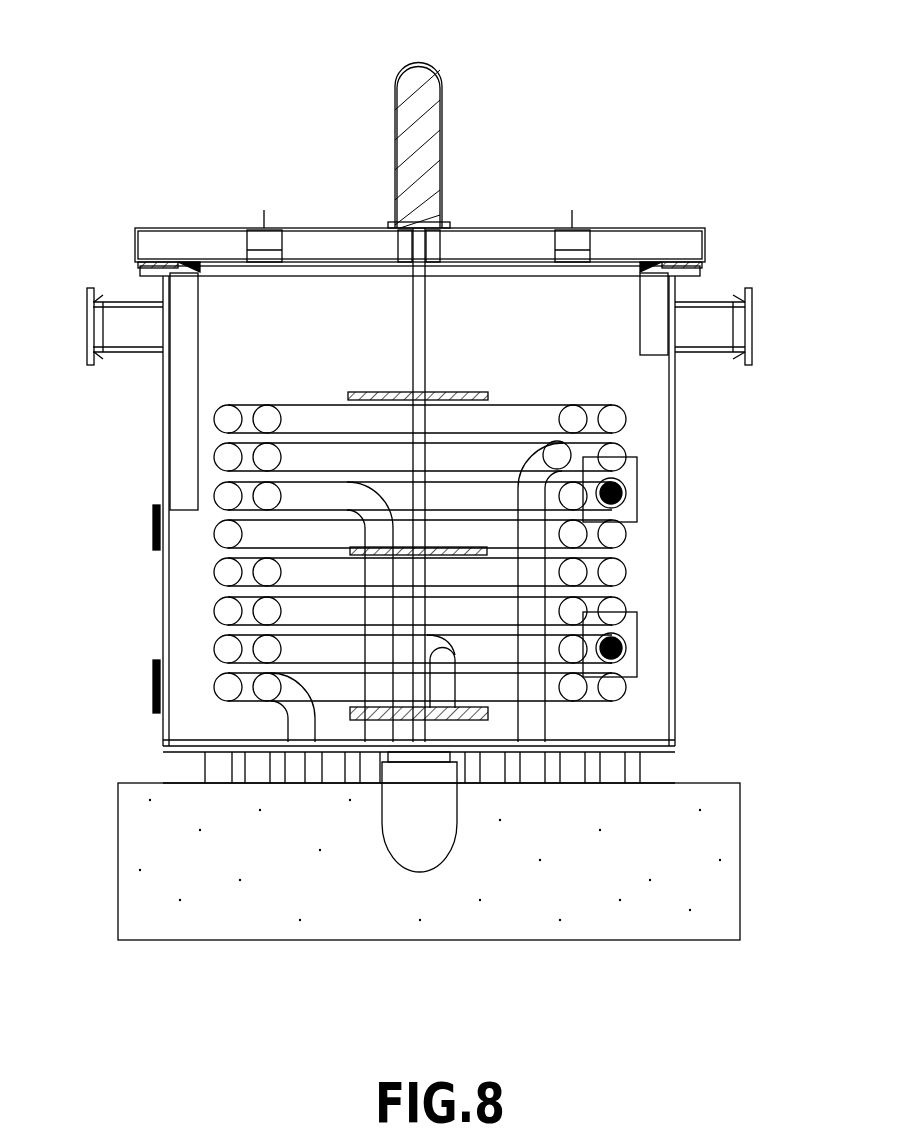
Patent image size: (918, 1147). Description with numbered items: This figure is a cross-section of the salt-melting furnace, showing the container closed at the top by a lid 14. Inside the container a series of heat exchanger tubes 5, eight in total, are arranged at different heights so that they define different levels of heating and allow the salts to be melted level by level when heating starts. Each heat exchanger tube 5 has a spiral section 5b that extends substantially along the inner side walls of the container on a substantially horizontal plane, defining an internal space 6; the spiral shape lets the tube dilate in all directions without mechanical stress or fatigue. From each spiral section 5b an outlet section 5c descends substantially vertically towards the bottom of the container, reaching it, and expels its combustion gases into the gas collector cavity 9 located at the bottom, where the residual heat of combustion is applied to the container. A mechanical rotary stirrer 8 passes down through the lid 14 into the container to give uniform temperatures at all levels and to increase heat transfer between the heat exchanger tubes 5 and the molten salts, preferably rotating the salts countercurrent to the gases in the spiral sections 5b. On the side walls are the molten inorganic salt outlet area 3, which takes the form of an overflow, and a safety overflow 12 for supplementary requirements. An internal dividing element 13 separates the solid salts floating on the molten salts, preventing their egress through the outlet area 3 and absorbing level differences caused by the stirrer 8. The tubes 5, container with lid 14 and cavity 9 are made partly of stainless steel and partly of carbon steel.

The molten inorganic salt outlet area 3 is at (131, 328).
The heat exchanger tube 5 is at (220, 610).
The spiral section 5b is at (620, 610).
The outlet section 5c is at (380, 685).
The internal space 6 is at (425, 521).
The mechanical rotary stirrer 8 is at (425, 97).
The gas collector cavity 9 is at (183, 770).
The safety overflow 12 is at (707, 328).
The internal dividing element 13 is at (198, 327).
The lid 14 is at (667, 245).